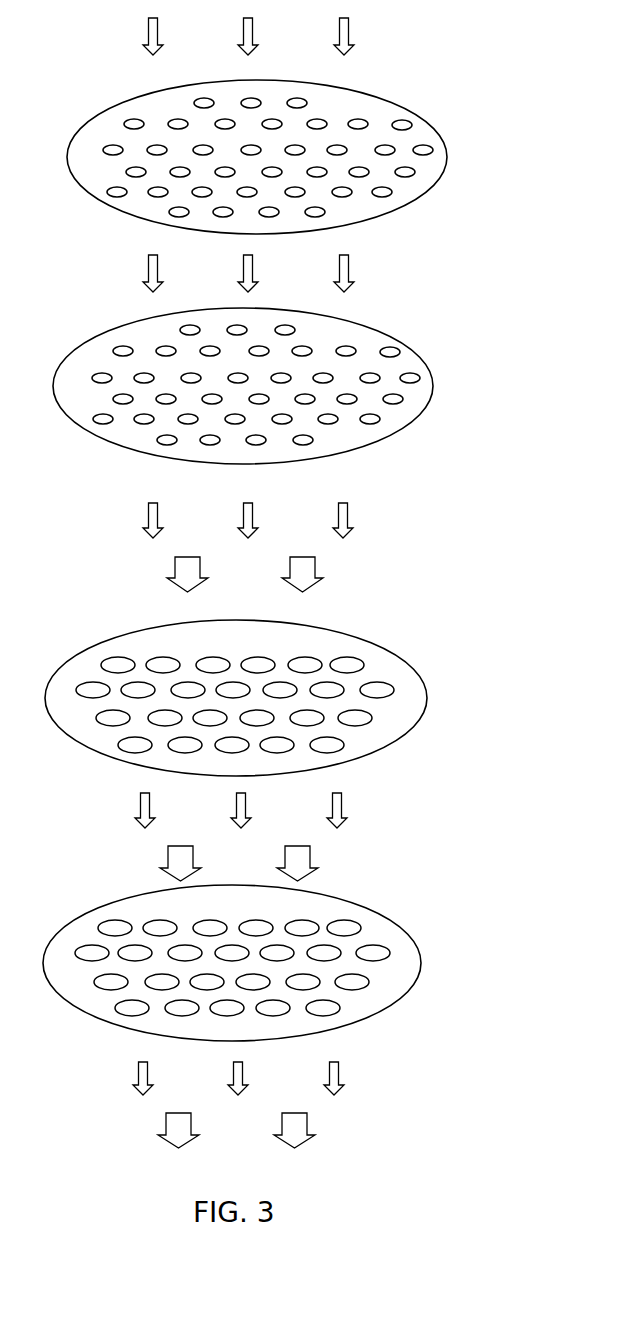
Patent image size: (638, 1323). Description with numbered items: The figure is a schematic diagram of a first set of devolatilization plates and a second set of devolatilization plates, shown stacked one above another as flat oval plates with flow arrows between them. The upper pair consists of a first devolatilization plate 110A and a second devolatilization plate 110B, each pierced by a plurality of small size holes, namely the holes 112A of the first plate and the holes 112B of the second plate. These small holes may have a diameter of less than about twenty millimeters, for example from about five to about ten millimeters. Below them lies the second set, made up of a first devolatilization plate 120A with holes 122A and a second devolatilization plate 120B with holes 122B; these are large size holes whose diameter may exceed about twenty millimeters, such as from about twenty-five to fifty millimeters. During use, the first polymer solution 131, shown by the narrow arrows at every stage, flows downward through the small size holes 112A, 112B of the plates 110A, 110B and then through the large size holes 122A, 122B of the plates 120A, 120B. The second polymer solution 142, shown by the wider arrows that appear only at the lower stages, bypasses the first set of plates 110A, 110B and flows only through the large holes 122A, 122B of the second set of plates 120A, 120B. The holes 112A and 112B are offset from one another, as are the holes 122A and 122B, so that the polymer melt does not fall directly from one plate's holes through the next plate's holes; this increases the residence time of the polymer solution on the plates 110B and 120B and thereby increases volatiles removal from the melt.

The first polymer solution 131 is at (146, 35).
The second polymer solution 142 is at (170, 570).
The first devolatilization plate 110A is at (430, 180).
The holes of first devolatilization plate 112A is at (408, 125).
The second devolatilization plate 110B is at (417, 403).
The holes of second devolatilization plate 112B is at (396, 352).
The first devolatilization plate of second set 120A is at (386, 663).
The holes of first devolatilization plate of second set 122A is at (362, 662).
The second devolatilization plate of second set 120B is at (390, 969).
The holes of second devolatilization plate of second set 122B is at (349, 924).